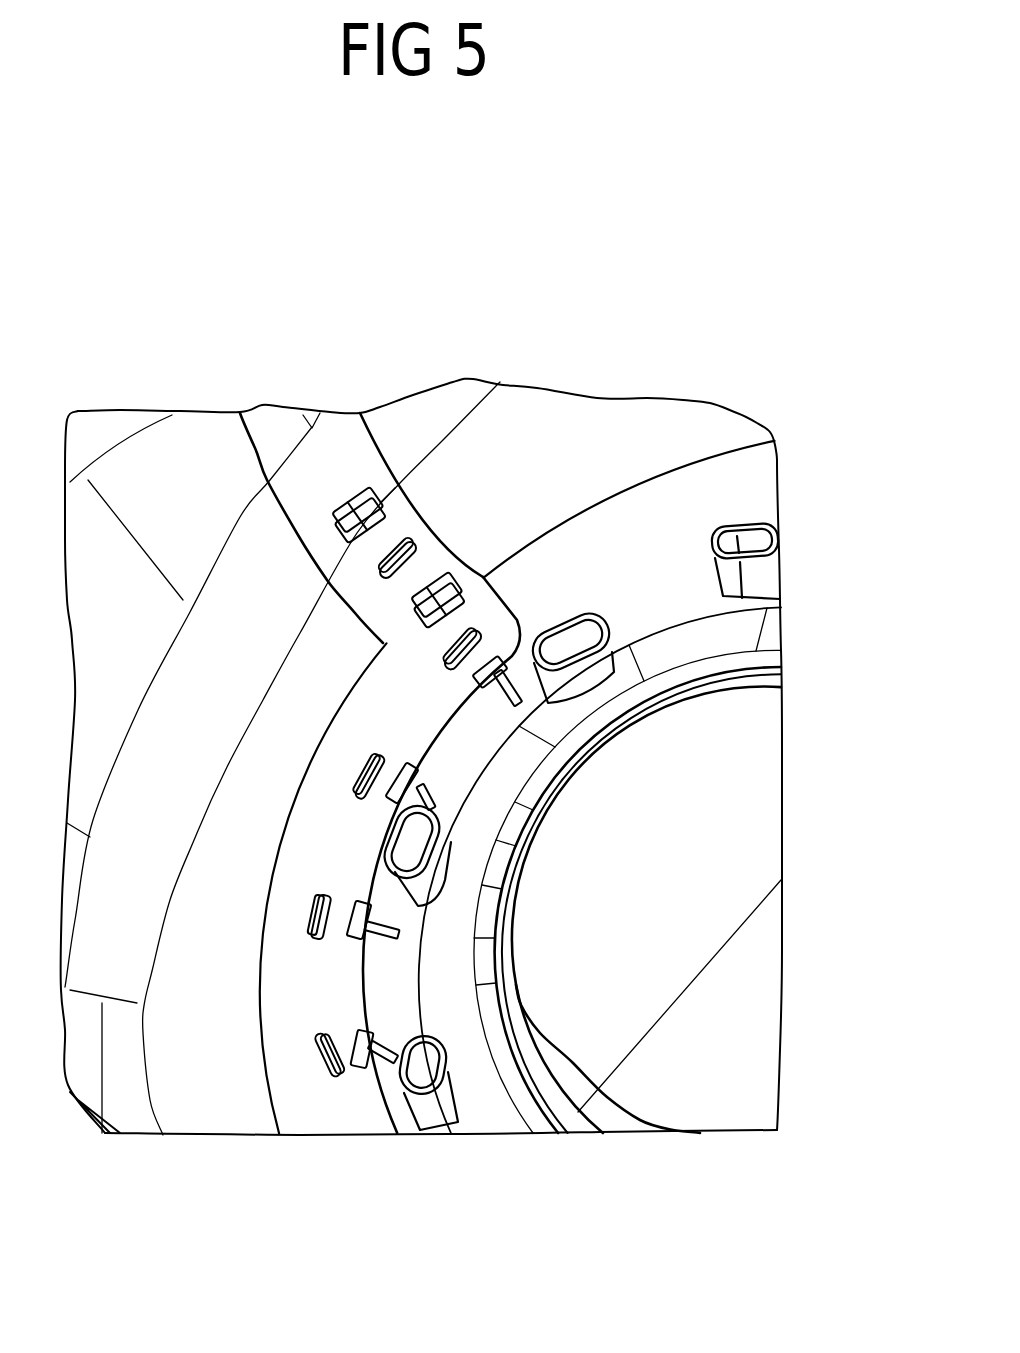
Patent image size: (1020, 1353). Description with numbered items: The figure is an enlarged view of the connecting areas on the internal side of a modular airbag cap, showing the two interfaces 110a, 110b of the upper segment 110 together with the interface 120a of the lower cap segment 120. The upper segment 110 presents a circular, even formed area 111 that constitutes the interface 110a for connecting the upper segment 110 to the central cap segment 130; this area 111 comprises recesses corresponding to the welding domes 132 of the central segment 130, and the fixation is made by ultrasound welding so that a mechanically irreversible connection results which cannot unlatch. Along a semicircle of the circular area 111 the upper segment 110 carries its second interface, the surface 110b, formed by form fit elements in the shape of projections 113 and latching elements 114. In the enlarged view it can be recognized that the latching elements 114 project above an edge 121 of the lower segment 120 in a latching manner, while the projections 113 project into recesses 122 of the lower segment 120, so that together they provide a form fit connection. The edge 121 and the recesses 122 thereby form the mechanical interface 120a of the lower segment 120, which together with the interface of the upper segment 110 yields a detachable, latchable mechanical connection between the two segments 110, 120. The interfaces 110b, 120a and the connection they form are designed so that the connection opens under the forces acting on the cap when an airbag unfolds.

The upper segment 110 is at (707, 422).
The interface 110a is at (648, 632).
The surface 110b is at (395, 968).
The circular, even formed area 111 is at (760, 497).
The projections 113 is at (403, 540).
The latching elements 114 is at (483, 697).
The lower cap segment 120 is at (285, 422).
The interface 120a is at (450, 686).
The edge 121 is at (408, 1120).
The recesses 122 is at (417, 557).
The central cap segment 130 is at (751, 805).
The welding domes 132 is at (577, 610).